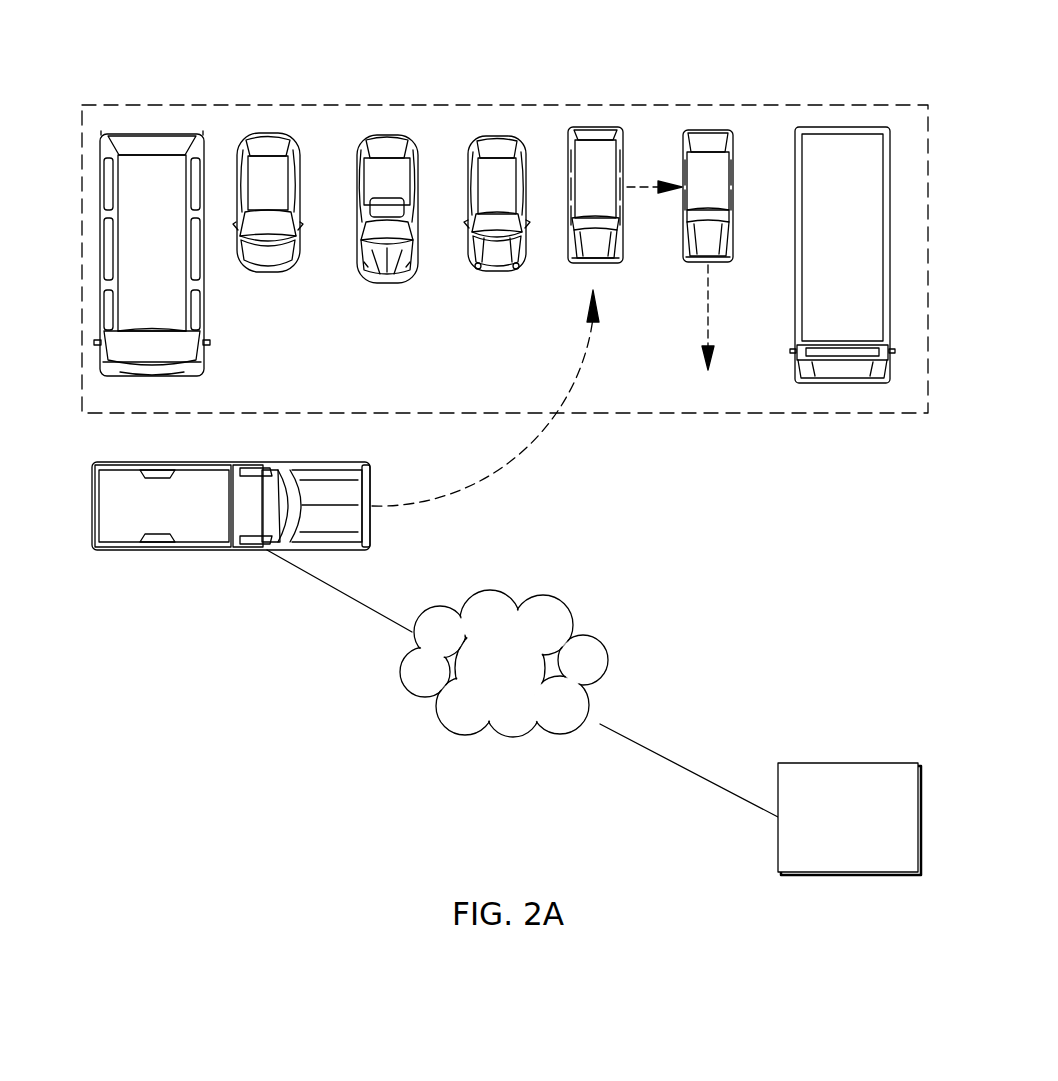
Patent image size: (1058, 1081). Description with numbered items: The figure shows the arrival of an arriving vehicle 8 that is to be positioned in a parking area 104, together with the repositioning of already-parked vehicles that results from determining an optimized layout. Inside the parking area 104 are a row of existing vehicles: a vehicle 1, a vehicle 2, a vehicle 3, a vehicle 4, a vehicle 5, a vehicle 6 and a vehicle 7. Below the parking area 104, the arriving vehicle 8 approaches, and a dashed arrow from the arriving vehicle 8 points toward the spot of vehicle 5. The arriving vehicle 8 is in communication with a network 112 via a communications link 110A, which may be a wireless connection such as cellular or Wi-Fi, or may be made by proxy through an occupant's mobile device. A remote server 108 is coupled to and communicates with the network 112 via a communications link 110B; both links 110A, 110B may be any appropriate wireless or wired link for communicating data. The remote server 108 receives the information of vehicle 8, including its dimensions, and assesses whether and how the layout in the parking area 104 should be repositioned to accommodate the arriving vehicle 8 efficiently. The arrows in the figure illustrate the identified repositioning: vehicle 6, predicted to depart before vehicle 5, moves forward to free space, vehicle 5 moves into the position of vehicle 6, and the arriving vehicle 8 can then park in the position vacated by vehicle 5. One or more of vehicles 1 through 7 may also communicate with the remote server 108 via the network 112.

The vehicle 1 is at (143, 266).
The vehicle 2 is at (268, 206).
The vehicle 3 is at (381, 188).
The vehicle 4 is at (491, 196).
The vehicle 5 is at (590, 189).
The vehicle 6 is at (702, 201).
The vehicle 7 is at (837, 258).
The arriving vehicle 8 is at (256, 515).
The parking area 104 is at (745, 105).
The remote server 108 is at (848, 763).
The communications link 110A is at (380, 613).
The communications link 110B is at (682, 766).
The network 112 is at (487, 599).